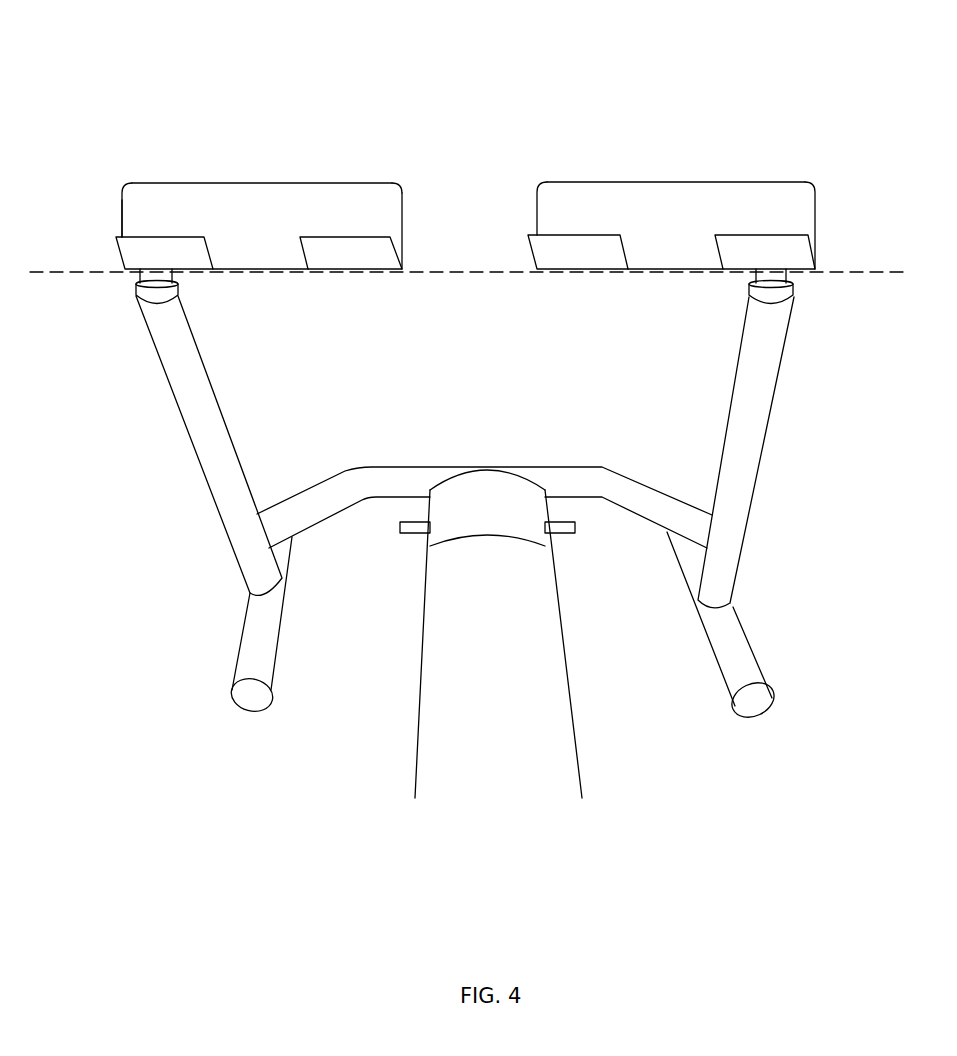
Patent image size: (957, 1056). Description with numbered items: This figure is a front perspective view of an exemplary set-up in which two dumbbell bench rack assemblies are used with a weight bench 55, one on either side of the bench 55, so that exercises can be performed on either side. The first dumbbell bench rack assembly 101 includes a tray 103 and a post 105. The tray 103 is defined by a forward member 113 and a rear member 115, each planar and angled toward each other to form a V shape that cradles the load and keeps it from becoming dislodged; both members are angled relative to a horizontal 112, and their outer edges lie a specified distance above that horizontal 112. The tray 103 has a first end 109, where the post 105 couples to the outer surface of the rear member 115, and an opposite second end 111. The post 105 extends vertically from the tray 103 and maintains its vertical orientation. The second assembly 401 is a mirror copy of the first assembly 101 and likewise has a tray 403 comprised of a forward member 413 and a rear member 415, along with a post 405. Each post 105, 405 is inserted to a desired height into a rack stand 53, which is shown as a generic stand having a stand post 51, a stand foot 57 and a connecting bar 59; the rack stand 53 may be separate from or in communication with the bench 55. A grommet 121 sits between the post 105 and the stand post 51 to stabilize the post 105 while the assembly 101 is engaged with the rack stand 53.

The dumbbell bench rack assembly 101 is at (232, 114).
The tray 103 is at (342, 162).
The rear member 115 is at (205, 200).
The first end 109 is at (95, 222).
The second end 111 is at (427, 215).
The forward member 113 is at (188, 247).
The post 105 is at (140, 273).
The grommet 121 is at (180, 284).
The horizontal 112 is at (452, 274).
The dumbbell bench rack assembly 401 is at (651, 114).
The tray 403 is at (769, 164).
The rear member 415 is at (580, 180).
The forward member 413 is at (593, 232).
The post 405 is at (752, 274).
The stand post 51 is at (177, 400).
The rack stand 53 is at (190, 555).
The connecting bar 59 is at (602, 465).
The stand foot 57 is at (706, 637).
The weight bench 55 is at (514, 820).